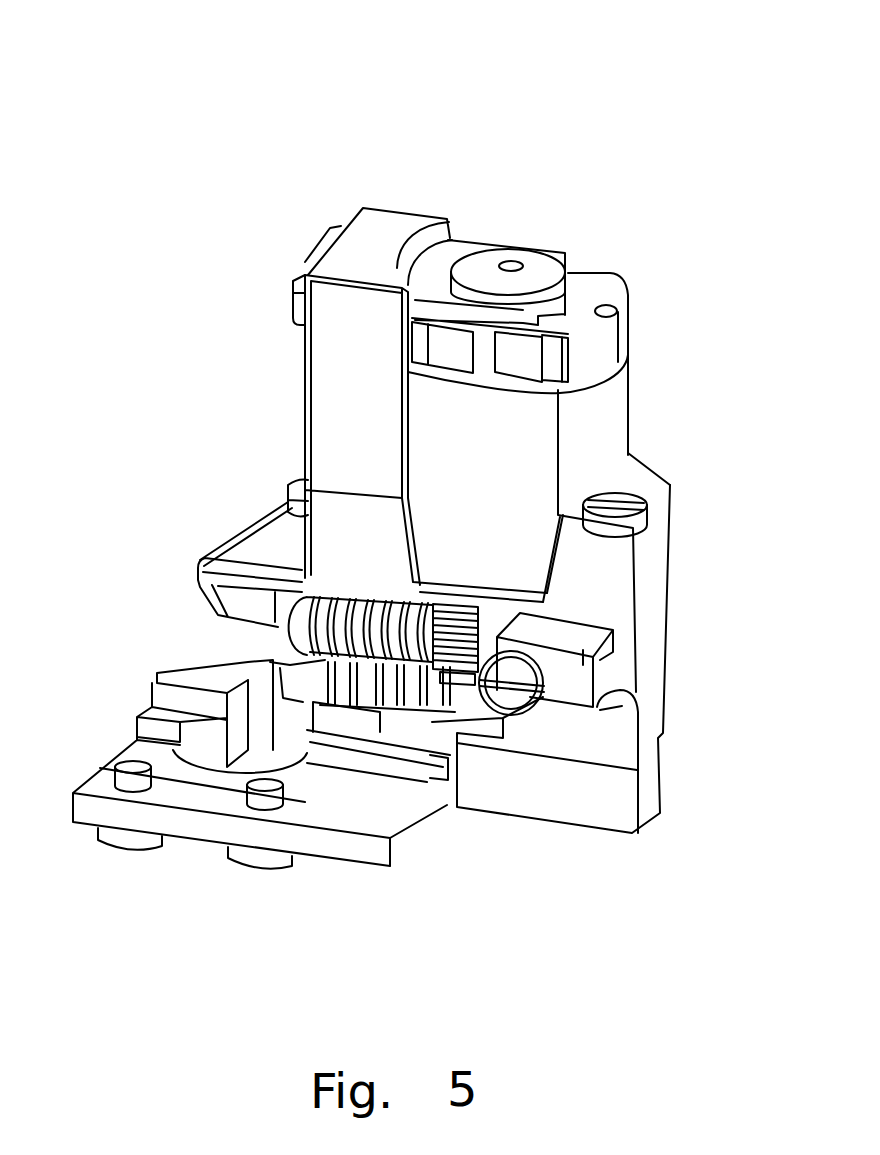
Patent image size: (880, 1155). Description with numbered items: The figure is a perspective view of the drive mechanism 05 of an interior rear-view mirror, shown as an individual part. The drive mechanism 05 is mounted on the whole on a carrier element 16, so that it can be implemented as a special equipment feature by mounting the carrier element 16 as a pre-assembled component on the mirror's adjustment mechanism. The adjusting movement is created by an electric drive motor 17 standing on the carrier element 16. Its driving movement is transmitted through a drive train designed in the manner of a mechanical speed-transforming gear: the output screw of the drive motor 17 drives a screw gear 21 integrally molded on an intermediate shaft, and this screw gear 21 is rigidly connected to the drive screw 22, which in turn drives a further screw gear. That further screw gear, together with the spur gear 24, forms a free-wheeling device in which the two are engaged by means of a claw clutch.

The drive mechanism 05 is at (692, 142).
The carrier element 16 is at (647, 795).
The drive motor 17 is at (587, 423).
The screw gear 21 is at (462, 625).
The drive screw 22 is at (345, 636).
The spur gear 24 is at (407, 690).